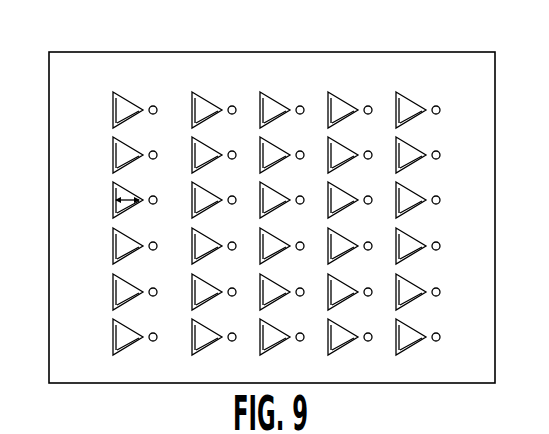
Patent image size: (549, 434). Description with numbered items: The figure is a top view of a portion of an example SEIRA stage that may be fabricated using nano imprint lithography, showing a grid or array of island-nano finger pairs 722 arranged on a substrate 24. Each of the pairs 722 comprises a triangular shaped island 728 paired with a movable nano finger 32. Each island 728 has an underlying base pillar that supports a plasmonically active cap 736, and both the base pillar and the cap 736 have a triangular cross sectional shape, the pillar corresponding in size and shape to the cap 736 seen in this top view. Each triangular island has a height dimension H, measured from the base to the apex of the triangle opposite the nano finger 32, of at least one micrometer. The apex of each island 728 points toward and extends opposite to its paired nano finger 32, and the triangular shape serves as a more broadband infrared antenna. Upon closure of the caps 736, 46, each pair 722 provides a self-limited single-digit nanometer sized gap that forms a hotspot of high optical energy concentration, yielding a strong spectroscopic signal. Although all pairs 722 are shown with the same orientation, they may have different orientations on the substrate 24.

The substrate 24 is at (497, 87).
The island-nano finger pairs 722 is at (188, 85).
The triangular shaped island 728 is at (108, 100).
The plasmonically active cap 736 is at (112, 123).
The movable nano finger 32 is at (153, 108).
The cap 46 is at (154, 114).
The height dimension H is at (126, 199).